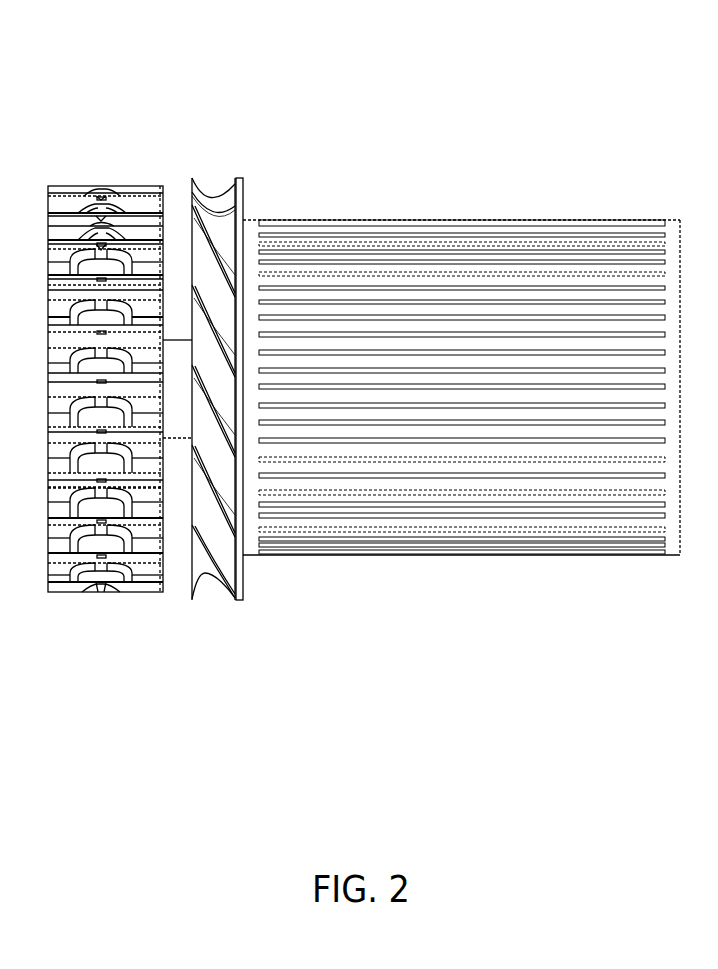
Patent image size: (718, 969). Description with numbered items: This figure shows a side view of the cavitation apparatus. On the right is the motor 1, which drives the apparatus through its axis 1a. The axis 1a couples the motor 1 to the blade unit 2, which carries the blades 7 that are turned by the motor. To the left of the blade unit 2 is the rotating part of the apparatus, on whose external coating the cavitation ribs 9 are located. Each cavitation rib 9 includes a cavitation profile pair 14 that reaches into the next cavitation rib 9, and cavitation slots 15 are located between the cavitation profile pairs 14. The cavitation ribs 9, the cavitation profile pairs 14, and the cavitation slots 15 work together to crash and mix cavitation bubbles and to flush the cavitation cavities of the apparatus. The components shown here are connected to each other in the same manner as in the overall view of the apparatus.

The motor 1 is at (478, 275).
The axis 1a is at (170, 365).
The blade unit 2 is at (240, 367).
The blades 7 is at (204, 522).
The cavitation ribs 9 is at (160, 232).
The cavitation profile pairs 14 is at (67, 278).
The cavitation slots 15 is at (101, 278).